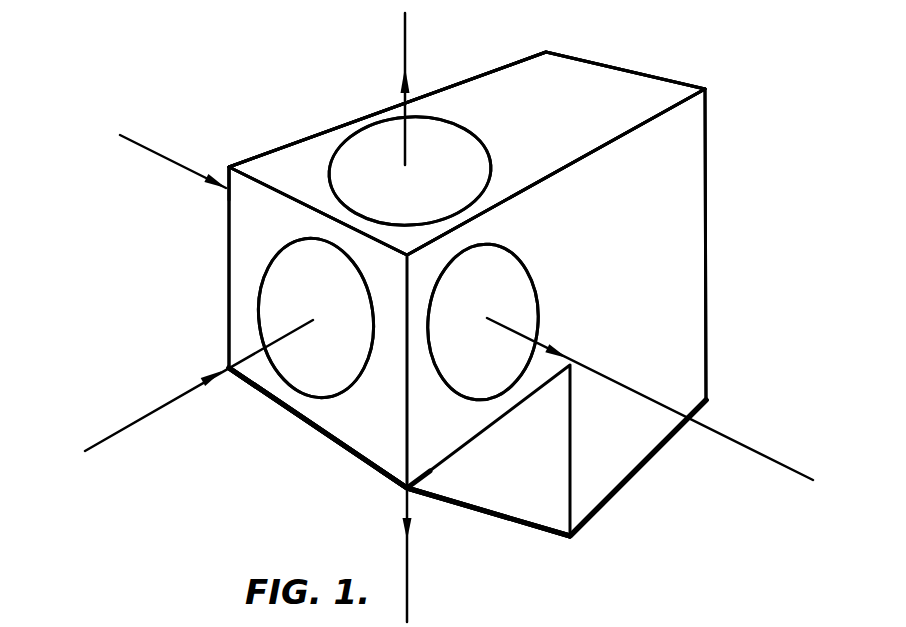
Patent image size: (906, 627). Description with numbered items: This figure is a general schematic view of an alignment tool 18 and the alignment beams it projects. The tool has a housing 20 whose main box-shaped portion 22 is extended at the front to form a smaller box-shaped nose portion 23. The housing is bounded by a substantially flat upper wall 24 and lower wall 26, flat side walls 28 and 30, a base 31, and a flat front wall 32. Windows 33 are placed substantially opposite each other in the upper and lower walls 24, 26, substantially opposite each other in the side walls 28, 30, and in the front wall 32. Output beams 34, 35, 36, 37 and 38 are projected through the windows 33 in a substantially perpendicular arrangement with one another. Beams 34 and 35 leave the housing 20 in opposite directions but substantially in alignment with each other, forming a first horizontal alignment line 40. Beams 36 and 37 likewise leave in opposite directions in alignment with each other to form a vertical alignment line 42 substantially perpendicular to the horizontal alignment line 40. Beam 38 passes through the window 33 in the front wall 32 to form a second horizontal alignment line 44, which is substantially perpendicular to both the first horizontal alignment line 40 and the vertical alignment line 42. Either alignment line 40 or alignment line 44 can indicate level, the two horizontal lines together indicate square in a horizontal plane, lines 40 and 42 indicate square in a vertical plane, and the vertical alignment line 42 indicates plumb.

The alignment tool 18 is at (535, 592).
The housing 20 is at (681, 152).
The box-shaped portion 22 is at (680, 278).
The nose portion 23 is at (243, 228).
The upper wall 24 is at (367, 463).
The lower wall 26 is at (304, 151).
The side wall 28 is at (490, 223).
The side wall 30 is at (259, 155).
The base 31 is at (645, 463).
The front wall 32 is at (263, 373).
The windows 33 is at (447, 137).
The output beam 34 is at (518, 332).
The output beam 35 is at (221, 185).
The output beam 36 is at (393, 127).
The output beam 37 is at (412, 503).
The output beam 38 is at (252, 357).
The first horizontal alignment line 40 is at (152, 152).
The vertical alignment line 42 is at (403, 27).
The second horizontal alignment line 44 is at (132, 423).